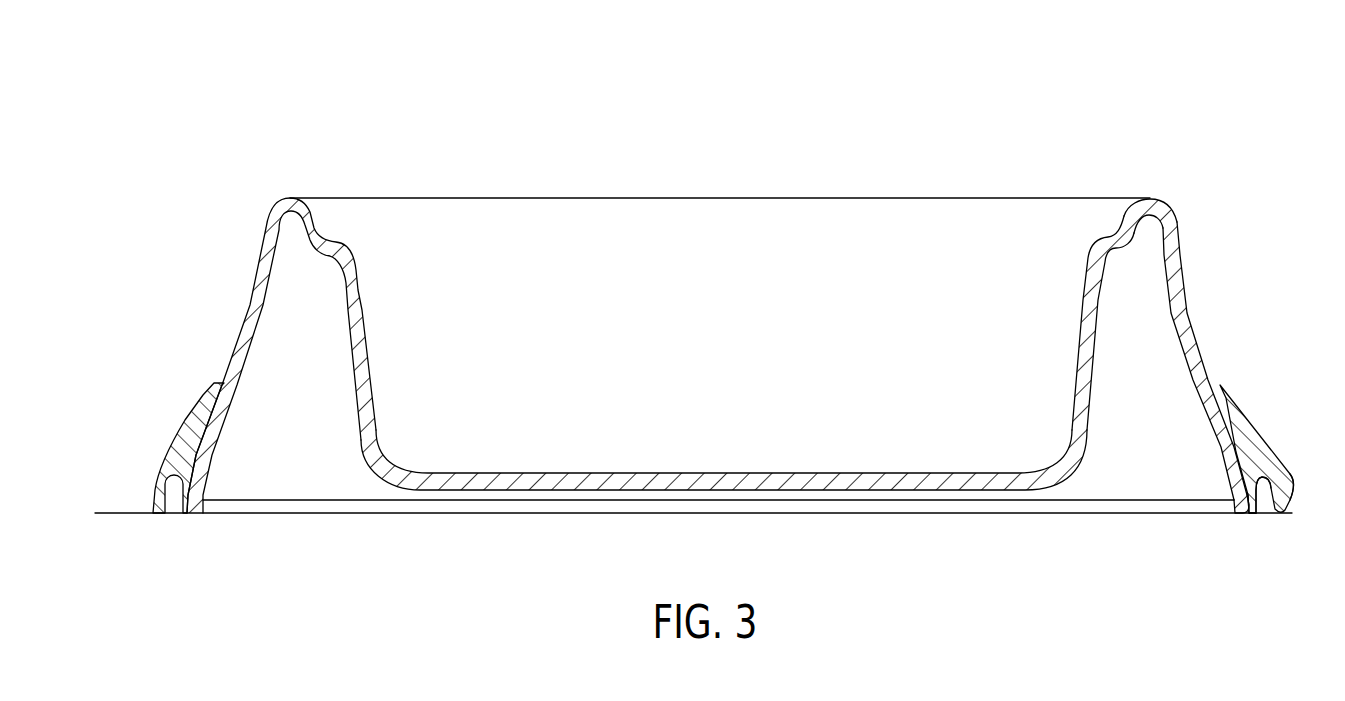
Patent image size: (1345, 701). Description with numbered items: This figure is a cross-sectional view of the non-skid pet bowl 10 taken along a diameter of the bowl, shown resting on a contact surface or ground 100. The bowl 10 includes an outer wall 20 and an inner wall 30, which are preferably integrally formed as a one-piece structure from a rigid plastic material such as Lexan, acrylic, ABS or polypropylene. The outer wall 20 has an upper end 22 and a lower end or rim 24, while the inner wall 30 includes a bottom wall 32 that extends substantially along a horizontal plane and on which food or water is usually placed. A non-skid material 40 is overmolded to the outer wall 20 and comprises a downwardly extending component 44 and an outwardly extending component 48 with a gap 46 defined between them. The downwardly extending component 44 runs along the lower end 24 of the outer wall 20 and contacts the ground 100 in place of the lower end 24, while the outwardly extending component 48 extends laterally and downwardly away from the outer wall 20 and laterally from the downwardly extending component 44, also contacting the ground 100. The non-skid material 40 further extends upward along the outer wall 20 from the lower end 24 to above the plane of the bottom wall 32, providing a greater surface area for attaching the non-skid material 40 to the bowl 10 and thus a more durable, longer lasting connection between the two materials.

The non-skid pet bowl 10 is at (357, 114).
The outer wall 20 is at (1195, 323).
The upper end 22 is at (1156, 208).
The lower end 24 is at (1238, 493).
The inner wall 30 is at (1080, 328).
The bottom wall 32 is at (695, 476).
The non-skid material 40 is at (1266, 413).
The downwardly extending component 44 is at (1246, 506).
The gap 46 is at (1266, 498).
The outwardly extending component 48 is at (1290, 477).
The contact surface 100 is at (118, 513).